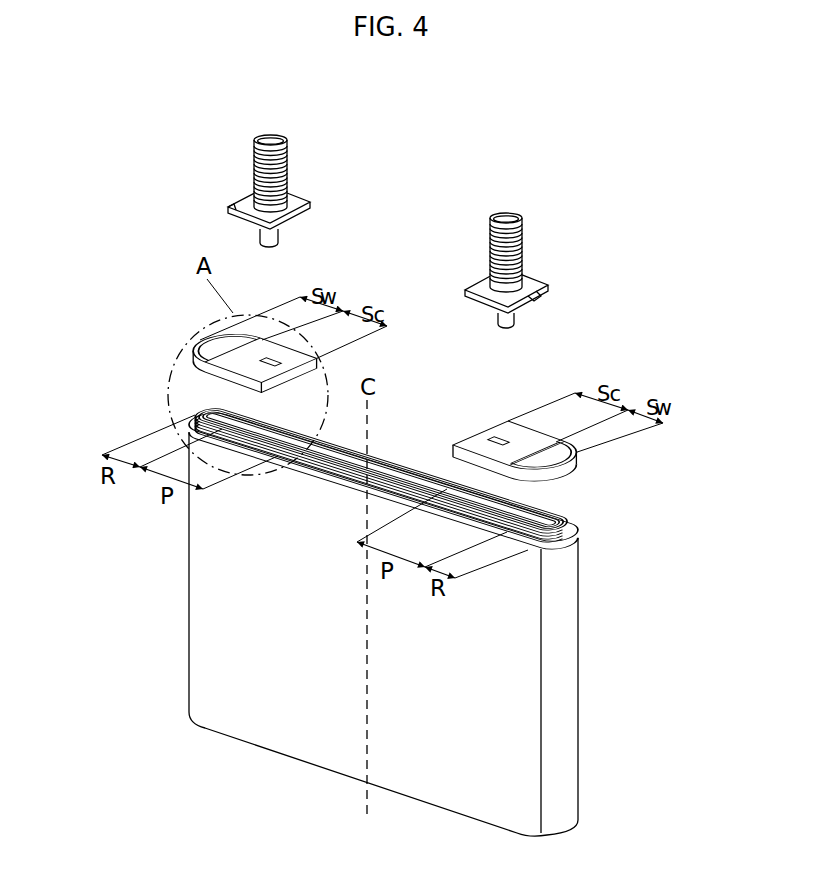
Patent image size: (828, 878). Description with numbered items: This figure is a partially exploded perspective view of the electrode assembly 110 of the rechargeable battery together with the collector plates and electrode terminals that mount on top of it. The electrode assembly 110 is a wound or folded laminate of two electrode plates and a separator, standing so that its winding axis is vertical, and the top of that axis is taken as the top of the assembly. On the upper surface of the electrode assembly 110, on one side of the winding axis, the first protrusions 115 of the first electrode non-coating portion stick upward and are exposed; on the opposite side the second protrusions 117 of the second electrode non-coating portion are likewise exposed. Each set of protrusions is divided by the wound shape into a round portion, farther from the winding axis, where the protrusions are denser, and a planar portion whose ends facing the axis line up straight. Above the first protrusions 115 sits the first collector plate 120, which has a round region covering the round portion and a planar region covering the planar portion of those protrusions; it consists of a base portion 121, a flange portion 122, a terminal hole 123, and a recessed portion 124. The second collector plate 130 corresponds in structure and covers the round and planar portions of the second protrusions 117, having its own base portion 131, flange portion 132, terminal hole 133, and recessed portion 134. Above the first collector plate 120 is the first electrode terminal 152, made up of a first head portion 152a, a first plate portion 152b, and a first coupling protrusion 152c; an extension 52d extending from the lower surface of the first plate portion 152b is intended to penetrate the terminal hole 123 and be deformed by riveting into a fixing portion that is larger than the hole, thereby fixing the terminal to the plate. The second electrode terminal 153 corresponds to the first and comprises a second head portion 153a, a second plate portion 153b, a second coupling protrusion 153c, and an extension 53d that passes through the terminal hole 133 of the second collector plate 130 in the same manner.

The electrode assembly 110 is at (189, 659).
The first protrusions 115 is at (196, 414).
The second protrusions 117 is at (572, 524).
The first collector plate 120 is at (211, 321).
The base portion 121 is at (248, 353).
The flange portion 122 is at (205, 371).
The terminal hole 123 is at (270, 361).
The recessed portion 124 is at (196, 347).
The second collector plate 130 is at (539, 421).
The base portion 131 is at (512, 438).
The flange portion 132 is at (456, 451).
The terminal hole 133 is at (494, 437).
The recessed portion 134 is at (558, 447).
The first electrode terminal 152 is at (275, 157).
The first head portion 152a is at (263, 140).
The first plate portion 152b is at (298, 195).
The first coupling protrusion 152c is at (242, 192).
The extension 52d is at (279, 237).
The second electrode terminal 153 is at (528, 243).
The second head portion 153a is at (502, 220).
The second plate portion 153b is at (480, 279).
The second coupling protrusion 153c is at (545, 298).
The extension 53d is at (515, 320).